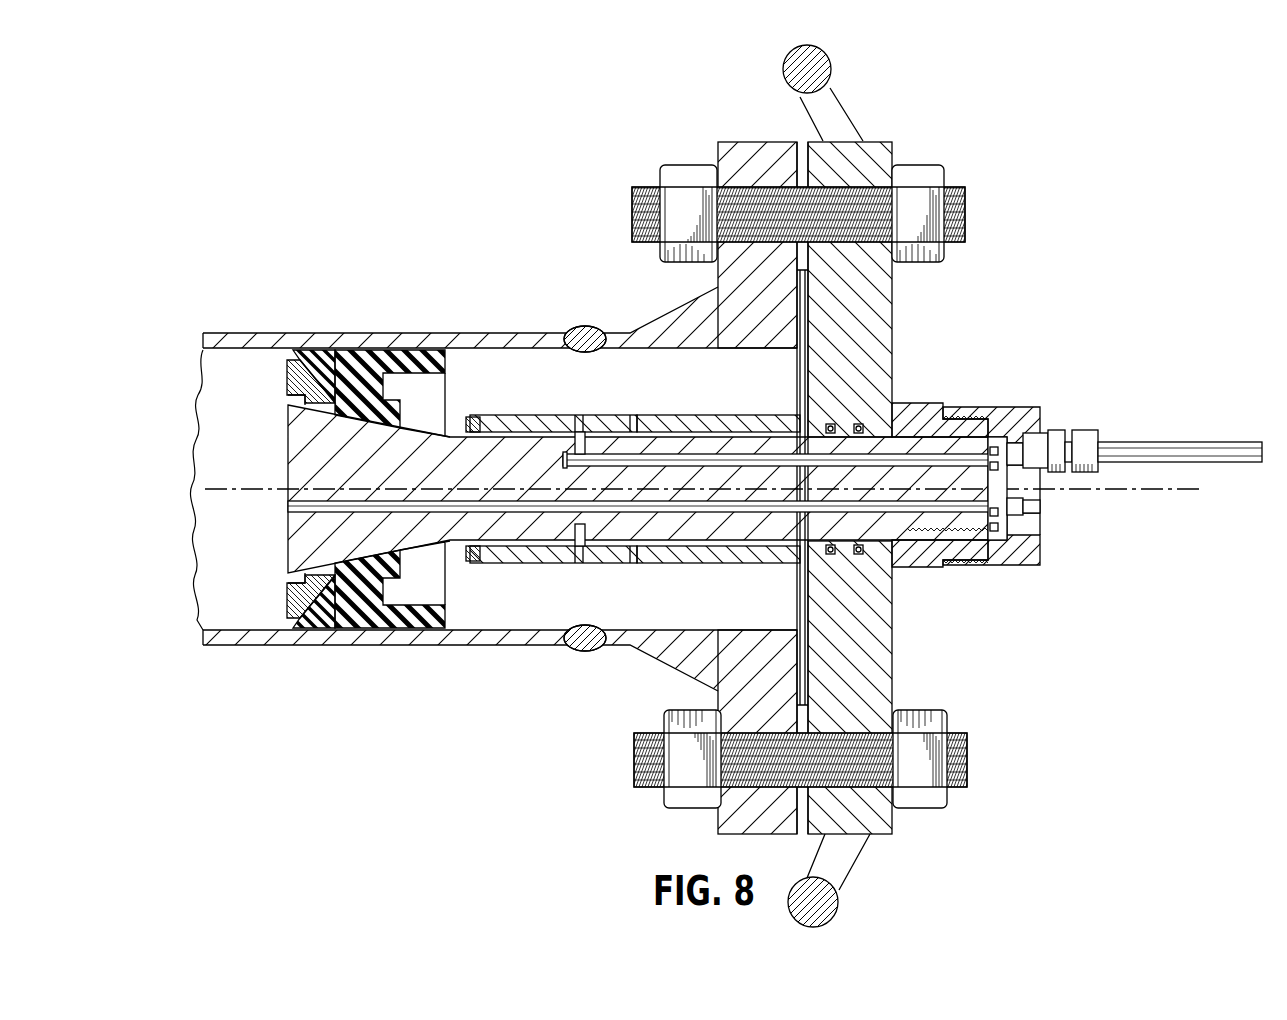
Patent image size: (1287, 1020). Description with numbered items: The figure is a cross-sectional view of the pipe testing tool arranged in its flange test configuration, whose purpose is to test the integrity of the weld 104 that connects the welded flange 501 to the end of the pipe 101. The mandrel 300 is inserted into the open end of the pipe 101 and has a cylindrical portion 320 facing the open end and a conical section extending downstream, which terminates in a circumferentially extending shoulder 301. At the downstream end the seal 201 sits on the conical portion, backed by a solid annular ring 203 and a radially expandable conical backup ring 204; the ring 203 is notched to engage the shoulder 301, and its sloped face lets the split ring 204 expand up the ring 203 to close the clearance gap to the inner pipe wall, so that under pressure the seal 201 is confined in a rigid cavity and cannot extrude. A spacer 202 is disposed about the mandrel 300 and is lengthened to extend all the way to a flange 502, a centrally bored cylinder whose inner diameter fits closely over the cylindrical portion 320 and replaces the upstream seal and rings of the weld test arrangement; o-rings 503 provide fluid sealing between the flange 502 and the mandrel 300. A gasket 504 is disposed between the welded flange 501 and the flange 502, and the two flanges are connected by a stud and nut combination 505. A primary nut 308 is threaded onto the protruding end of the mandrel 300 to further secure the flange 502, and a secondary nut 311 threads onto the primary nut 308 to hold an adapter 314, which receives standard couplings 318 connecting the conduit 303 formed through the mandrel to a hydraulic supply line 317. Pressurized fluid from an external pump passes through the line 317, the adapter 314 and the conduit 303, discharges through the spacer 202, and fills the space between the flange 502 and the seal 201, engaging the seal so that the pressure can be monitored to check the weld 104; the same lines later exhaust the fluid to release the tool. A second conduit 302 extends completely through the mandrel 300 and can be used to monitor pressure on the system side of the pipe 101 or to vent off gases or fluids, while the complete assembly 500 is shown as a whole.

The pipe 101 is at (490, 333).
The weld 104 is at (586, 650).
The seal 201 is at (365, 352).
The spacer 202 is at (556, 415).
The solid annular ring 203 is at (288, 378).
The radially expandable conical backup ring 204 is at (312, 352).
The mandrel 300 is at (635, 540).
The shoulder 301 is at (292, 404).
The second conduit 302 is at (290, 508).
The conduit 303 is at (635, 454).
The primary nut 308 is at (920, 403).
The secondary nut 311 is at (965, 407).
The adapter 314 is at (1040, 533).
The hydraulic supply line 317 is at (1250, 443).
The couplings 318 is at (1085, 432).
The cylindrical portion 320 is at (680, 430).
The flange assembly 500 is at (414, 715).
The flange 501 is at (642, 322).
The flange 502 is at (850, 300).
The o-rings 503 is at (862, 424).
The gasket 504 is at (808, 655).
The stud and nut combination 505 is at (968, 762).